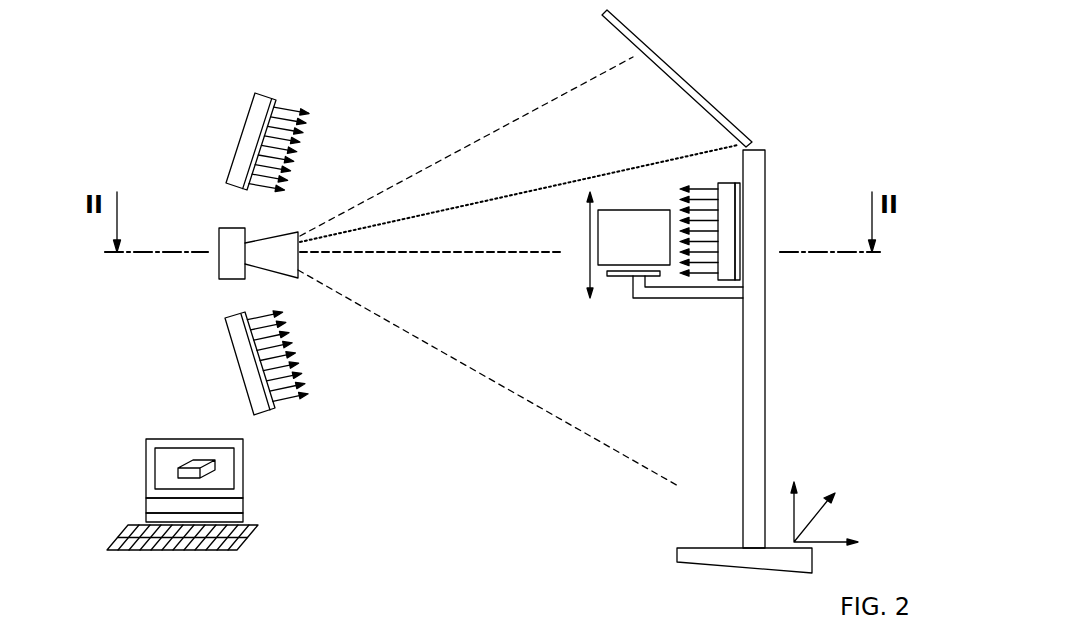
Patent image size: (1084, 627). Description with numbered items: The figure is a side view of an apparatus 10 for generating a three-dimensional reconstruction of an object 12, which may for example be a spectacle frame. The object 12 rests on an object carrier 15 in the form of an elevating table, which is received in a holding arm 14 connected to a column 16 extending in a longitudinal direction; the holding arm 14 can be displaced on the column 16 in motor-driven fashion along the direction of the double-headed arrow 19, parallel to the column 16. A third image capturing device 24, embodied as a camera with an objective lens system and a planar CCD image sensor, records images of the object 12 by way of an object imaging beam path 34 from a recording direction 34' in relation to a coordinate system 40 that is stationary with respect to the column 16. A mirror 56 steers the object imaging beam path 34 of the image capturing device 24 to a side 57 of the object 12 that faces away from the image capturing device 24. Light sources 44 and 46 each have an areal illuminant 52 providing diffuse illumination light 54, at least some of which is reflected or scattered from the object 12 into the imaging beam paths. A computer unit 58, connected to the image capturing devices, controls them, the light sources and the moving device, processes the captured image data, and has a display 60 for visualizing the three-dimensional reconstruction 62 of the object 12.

The apparatus 10 is at (170, 50).
The object 12 is at (646, 252).
The holding arm 14 is at (678, 298).
The object carrier 15 is at (622, 277).
The column 16 is at (765, 388).
The double-headed arrow 19 is at (590, 270).
The third image capturing device 24 is at (223, 228).
The object imaging beam path 34 is at (489, 272).
The recording direction 34' is at (519, 185).
The coordinate system 40 is at (797, 514).
The light source 44 is at (267, 413).
The light source 46 is at (267, 97).
The areal illuminant 52 is at (243, 190).
The illumination light 54 is at (292, 107).
The mirror 56 is at (662, 60).
The side of the object 57 is at (636, 198).
The computer unit 58 is at (146, 507).
The display 60 is at (195, 438).
The 3D reconstruction 62 is at (180, 472).